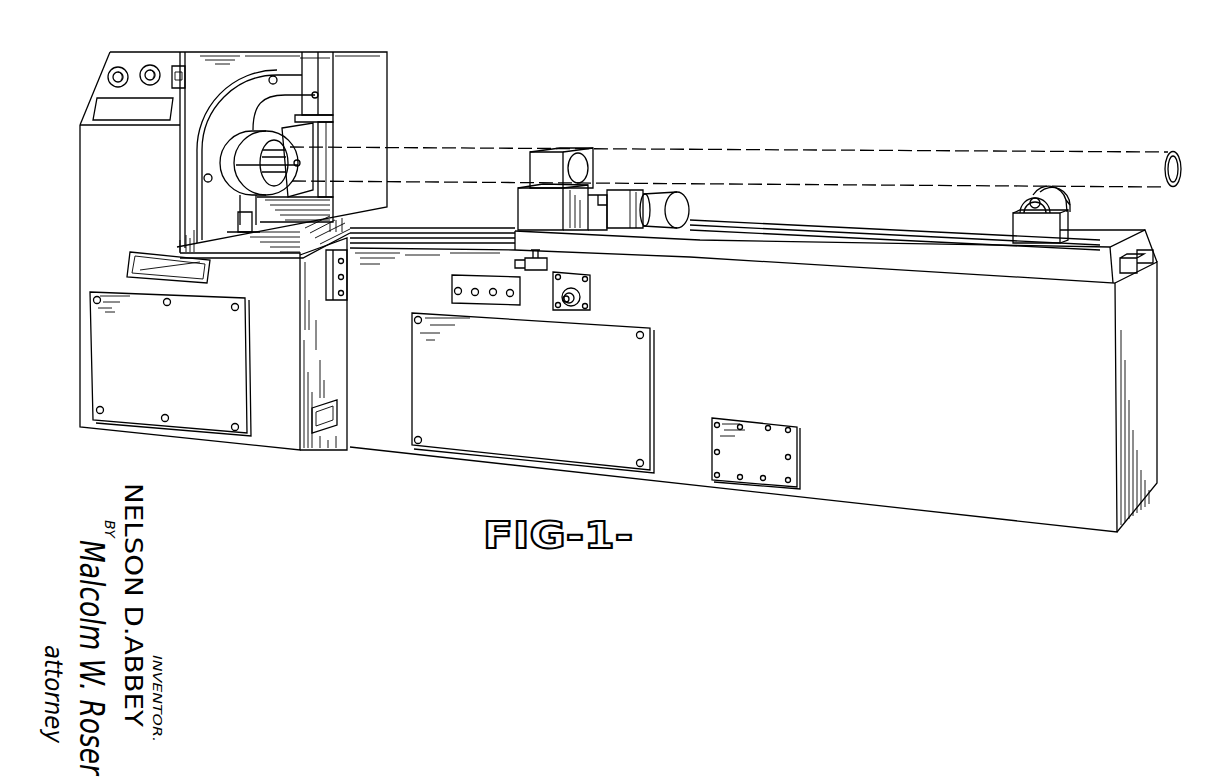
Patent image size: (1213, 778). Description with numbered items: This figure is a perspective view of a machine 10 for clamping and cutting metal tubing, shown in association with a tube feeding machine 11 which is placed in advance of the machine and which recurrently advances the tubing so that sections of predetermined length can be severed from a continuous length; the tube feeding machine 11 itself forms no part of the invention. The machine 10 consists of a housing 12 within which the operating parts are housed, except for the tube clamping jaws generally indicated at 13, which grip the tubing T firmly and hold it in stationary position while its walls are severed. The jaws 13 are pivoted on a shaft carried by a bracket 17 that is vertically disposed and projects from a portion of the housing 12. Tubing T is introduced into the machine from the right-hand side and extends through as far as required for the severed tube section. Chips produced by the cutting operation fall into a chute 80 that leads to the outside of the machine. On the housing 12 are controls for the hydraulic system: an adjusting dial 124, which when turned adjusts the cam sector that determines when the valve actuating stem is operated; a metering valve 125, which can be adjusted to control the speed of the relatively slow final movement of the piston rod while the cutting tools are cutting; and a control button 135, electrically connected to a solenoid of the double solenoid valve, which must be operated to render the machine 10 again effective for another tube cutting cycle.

The machine 10 is at (391, 103).
The tube feeding machine 11 is at (862, 497).
The housing 12 is at (85, 236).
The tube clamping jaws 13 is at (250, 153).
The bracket 17 is at (303, 138).
The chute 80 is at (207, 268).
The adjusting dial 124 is at (170, 43).
The metering valve 125 is at (110, 70).
The control button 135 is at (187, 64).
The tubing T is at (415, 148).